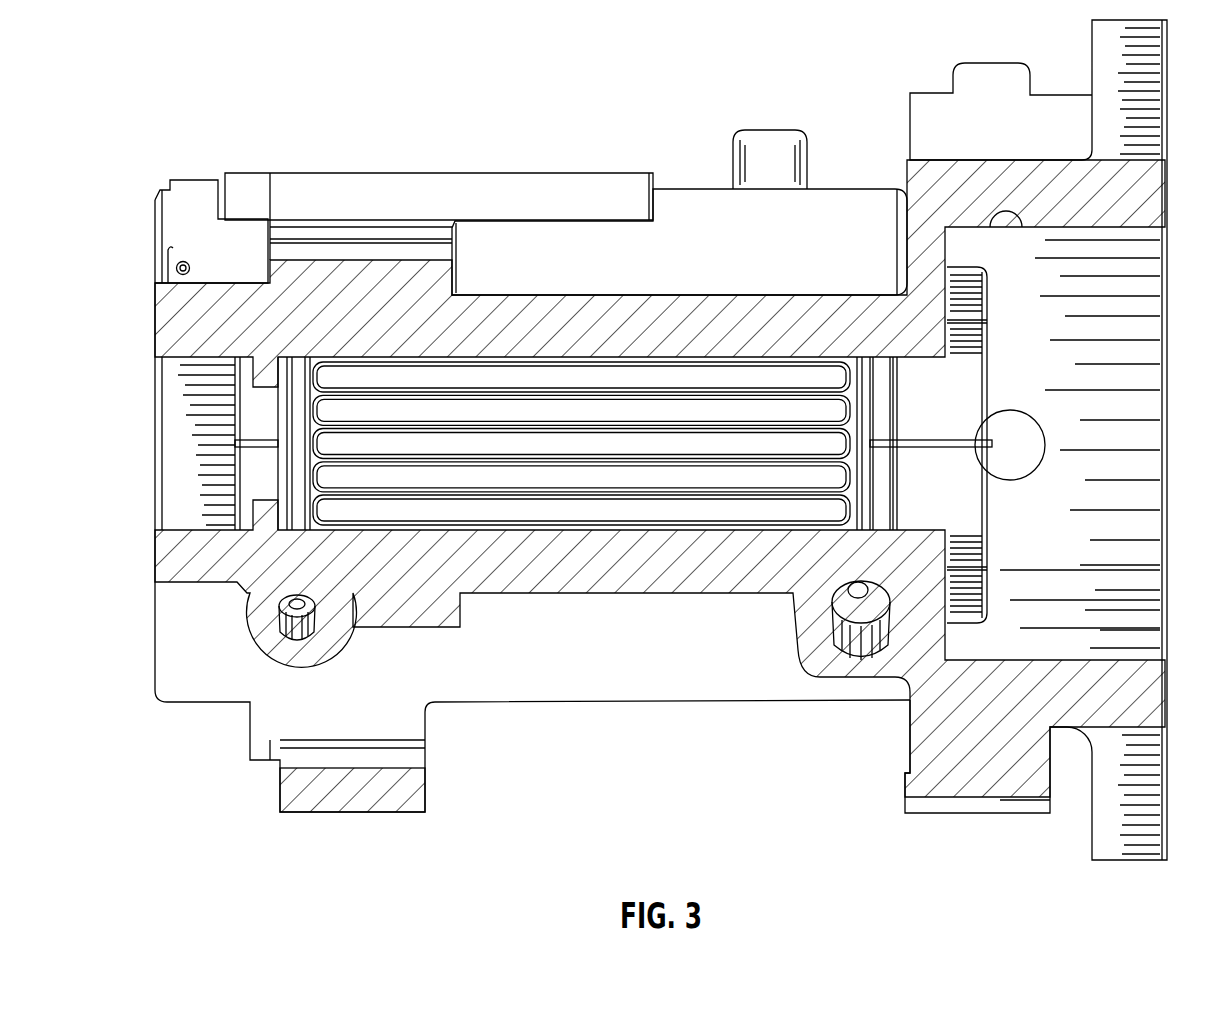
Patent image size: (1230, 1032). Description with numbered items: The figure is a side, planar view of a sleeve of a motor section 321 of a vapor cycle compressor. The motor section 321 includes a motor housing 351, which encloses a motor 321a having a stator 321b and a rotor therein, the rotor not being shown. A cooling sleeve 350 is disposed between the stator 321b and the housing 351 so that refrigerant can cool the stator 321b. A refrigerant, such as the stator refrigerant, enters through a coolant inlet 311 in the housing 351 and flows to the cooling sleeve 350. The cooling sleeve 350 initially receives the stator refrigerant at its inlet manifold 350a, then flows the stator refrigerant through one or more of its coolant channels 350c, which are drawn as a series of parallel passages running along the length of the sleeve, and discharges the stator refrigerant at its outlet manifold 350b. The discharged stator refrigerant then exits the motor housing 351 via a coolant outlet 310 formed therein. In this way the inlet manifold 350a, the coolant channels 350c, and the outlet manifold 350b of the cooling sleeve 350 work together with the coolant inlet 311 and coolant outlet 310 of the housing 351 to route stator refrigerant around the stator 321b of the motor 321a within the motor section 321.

The motor section 321 is at (455, 130).
The motor 321a is at (606, 356).
The stator 321b is at (975, 298).
The cooling sleeve 350 is at (273, 468).
The inlet manifold 350a is at (297, 413).
The outlet manifold 350b is at (862, 382).
The coolant channels 350c is at (466, 412).
The motor housing 351 is at (193, 188).
The coolant inlet 311 is at (283, 613).
The coolant outlet 310 is at (812, 620).